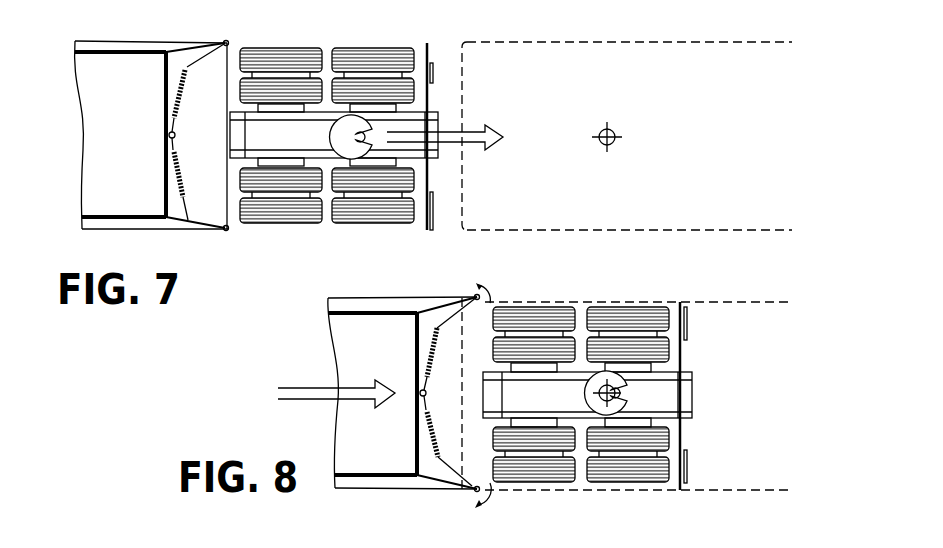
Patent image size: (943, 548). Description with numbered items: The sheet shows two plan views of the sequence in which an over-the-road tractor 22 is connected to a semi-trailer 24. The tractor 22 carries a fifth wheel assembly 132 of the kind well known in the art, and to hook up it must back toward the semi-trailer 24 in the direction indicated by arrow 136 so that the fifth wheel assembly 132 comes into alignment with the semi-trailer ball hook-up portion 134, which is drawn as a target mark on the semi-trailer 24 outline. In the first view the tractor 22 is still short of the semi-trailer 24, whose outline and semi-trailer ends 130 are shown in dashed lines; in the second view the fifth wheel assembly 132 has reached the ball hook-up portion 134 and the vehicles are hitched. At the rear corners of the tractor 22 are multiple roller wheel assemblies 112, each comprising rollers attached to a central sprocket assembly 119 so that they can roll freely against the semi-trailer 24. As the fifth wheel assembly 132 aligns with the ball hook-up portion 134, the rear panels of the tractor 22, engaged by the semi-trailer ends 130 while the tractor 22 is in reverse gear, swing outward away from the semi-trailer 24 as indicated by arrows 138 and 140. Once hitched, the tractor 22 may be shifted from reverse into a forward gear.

In FIG. 7, the tractor 22 is at (128, 234).
In FIG. 8, the tractor 22 is at (413, 493).
In FIG. 7, the semi-trailer 24 is at (680, 233).
In FIG. 8, the semi-trailer 24 is at (757, 493).
In FIG. 7, the multiple roller wheel assembly 112 is at (226, 40).
In FIG. 7, the central sprocket assembly 119 is at (176, 136).
In FIG. 8, the central sprocket assembly 119 is at (448, 391).
In FIG. 7, the semi-trailer ends 130 is at (466, 40).
In FIG. 7, the fifth wheel assembly 132 is at (336, 158).
In FIG. 8, the fifth wheel assembly 132 is at (575, 483).
In FIG. 7, the semi-trailer ball hook-up portion 134 is at (600, 146).
In FIG. 8, the semi-trailer ball hook-up portion 134 is at (615, 395).
In FIG. 7, the arrow 136 is at (453, 130).
In FIG. 8, the arrow 136 is at (311, 388).
In FIG. 8, the arrow 138 is at (512, 266).
In FIG. 8, the arrow 140 is at (489, 497).